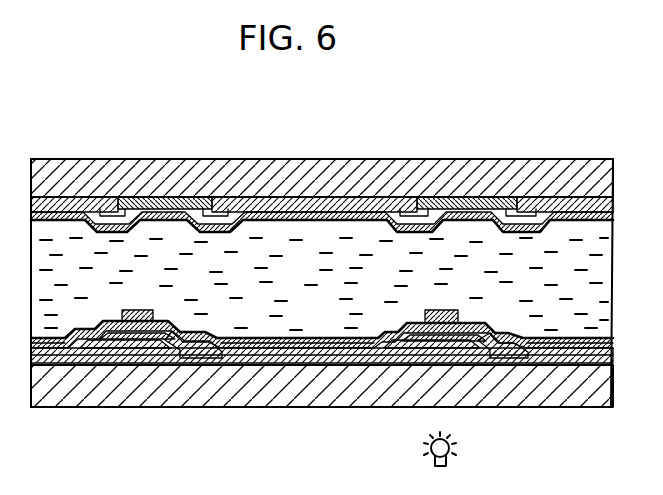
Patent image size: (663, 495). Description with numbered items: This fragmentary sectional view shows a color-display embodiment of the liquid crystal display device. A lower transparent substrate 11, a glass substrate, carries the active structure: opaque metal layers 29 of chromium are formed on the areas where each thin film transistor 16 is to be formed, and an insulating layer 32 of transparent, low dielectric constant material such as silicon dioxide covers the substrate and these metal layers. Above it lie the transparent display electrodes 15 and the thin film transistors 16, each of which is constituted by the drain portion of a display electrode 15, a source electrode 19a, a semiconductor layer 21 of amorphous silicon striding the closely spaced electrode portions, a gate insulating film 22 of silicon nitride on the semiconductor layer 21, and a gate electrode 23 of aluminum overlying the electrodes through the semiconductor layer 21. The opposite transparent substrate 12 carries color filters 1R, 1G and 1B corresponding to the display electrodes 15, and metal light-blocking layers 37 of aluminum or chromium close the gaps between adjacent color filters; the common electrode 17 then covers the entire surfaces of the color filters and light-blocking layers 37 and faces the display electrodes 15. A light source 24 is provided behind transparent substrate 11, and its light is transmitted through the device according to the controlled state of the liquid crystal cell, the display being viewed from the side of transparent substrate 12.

The blue color filter 1B is at (65, 198).
The red color filter 1R is at (320, 207).
The green color filter 1G is at (588, 205).
The transparent substrate 12 is at (548, 160).
The metal light-blocking layer 37 is at (175, 198).
The common electrode 17 is at (324, 284).
The thin film transistor 16 is at (201, 289).
The display electrode 15 is at (250, 338).
The gate insulating film 22 is at (107, 318).
The gate electrode 23 is at (140, 310).
The insulating layer 32 is at (98, 364).
The semiconductor layer 21 is at (140, 360).
The opaque metal layer 29 is at (178, 362).
The source electrode 19a is at (200, 365).
The transparent substrate 11 is at (578, 407).
The light source 24 is at (453, 450).